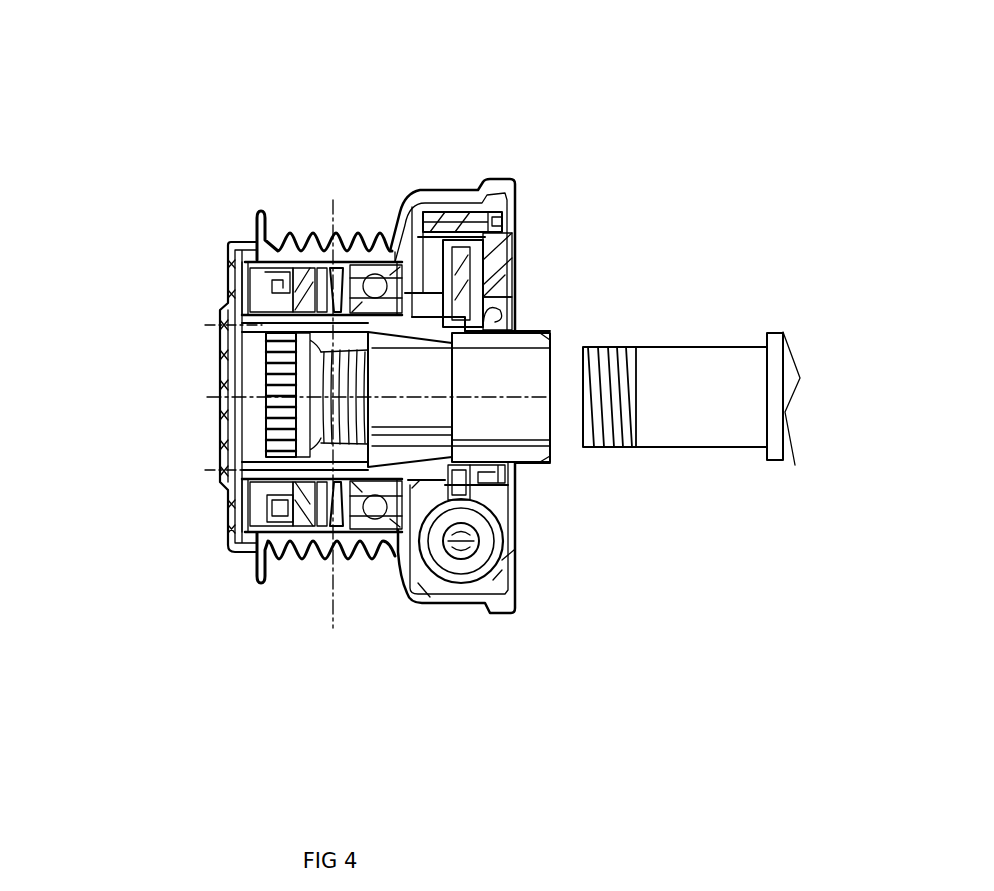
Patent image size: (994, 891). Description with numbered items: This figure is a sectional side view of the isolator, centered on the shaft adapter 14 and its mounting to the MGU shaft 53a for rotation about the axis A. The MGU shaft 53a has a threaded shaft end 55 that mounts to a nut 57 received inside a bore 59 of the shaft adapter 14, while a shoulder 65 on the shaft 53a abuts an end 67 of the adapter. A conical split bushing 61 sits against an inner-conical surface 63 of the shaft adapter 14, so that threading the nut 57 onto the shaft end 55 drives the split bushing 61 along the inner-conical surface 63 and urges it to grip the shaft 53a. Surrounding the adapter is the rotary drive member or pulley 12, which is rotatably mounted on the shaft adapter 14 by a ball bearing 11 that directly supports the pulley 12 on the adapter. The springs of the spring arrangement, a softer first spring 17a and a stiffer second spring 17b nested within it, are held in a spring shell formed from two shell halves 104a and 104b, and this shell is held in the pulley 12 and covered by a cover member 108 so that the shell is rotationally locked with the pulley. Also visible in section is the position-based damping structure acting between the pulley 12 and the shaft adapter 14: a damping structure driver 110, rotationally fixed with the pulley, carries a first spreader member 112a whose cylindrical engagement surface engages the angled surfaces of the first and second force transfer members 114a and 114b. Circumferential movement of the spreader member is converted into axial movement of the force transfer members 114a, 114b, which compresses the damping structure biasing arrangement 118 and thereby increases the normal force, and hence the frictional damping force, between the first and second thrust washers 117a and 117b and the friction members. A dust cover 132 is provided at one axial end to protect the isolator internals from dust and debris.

The damping structure driver 110 is at (259, 233).
The first spreader member 112a is at (245, 240).
The damping structure biasing arrangement 118 is at (332, 243).
The rotary drive member 12 is at (335, 255).
The ball bearing 11 is at (383, 262).
The conical split bushing 61 is at (393, 340).
The cover member 108 is at (540, 190).
The dust cover 132 is at (232, 262).
The bore 59 is at (243, 348).
The end 67 is at (555, 332).
The MGU shaft 53a is at (688, 347).
The shoulder 65 is at (767, 340).
The axis A is at (255, 394).
The nut 57 is at (275, 462).
The shaft adapter 14 is at (232, 530).
The shaft end 55 is at (598, 447).
The first thrust washer 117a is at (233, 542).
The second thrust washer 117b is at (327, 556).
The first force transfer member 114a is at (262, 520).
The second force transfer member 114b is at (300, 525).
The inner-conical surface 63 is at (405, 320).
The first spring 17a is at (440, 567).
The second spring 17b is at (517, 570).
The second shell half 104b is at (428, 598).
The first shell half 104a is at (513, 617).